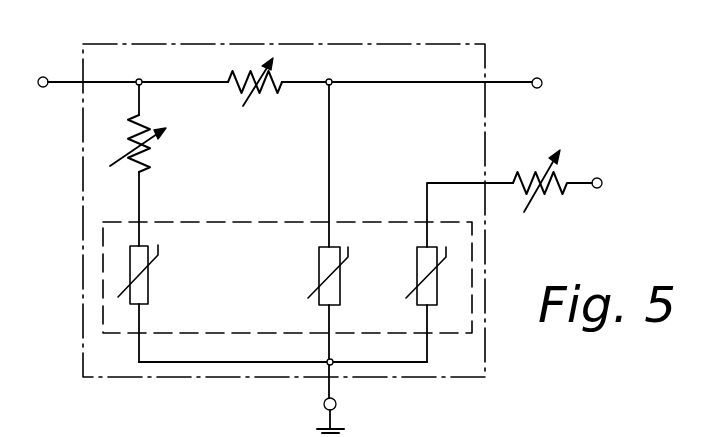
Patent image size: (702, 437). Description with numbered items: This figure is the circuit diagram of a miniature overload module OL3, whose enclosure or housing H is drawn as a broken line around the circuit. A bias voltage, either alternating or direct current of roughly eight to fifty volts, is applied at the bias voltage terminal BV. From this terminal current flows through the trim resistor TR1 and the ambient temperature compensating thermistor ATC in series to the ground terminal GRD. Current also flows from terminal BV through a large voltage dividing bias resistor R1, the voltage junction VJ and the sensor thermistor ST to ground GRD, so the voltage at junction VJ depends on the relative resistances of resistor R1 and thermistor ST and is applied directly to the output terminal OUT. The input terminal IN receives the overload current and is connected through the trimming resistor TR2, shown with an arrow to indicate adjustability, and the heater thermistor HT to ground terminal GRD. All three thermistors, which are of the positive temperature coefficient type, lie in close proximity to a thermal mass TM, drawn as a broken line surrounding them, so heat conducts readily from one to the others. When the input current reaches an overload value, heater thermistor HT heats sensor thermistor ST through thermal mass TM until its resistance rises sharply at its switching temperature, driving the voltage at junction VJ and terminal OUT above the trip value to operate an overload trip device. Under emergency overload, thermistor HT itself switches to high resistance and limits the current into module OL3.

The overload module OL3 is at (263, 27).
The housing H is at (173, 43).
The bias voltage terminal BV is at (55, 64).
The output terminal OUT is at (546, 70).
The input terminal IN is at (596, 190).
The ground terminal GRD is at (324, 405).
The bias resistor R1 is at (255, 93).
The trim resistor TR1 is at (160, 150).
The trimming resistor TR2 is at (551, 156).
The voltage junction VJ is at (332, 86).
The thermal mass TM is at (273, 222).
The ambient temperature compensating thermistor ATC is at (149, 281).
The sensor thermistor ST is at (318, 262).
The heater thermistor HT is at (416, 262).